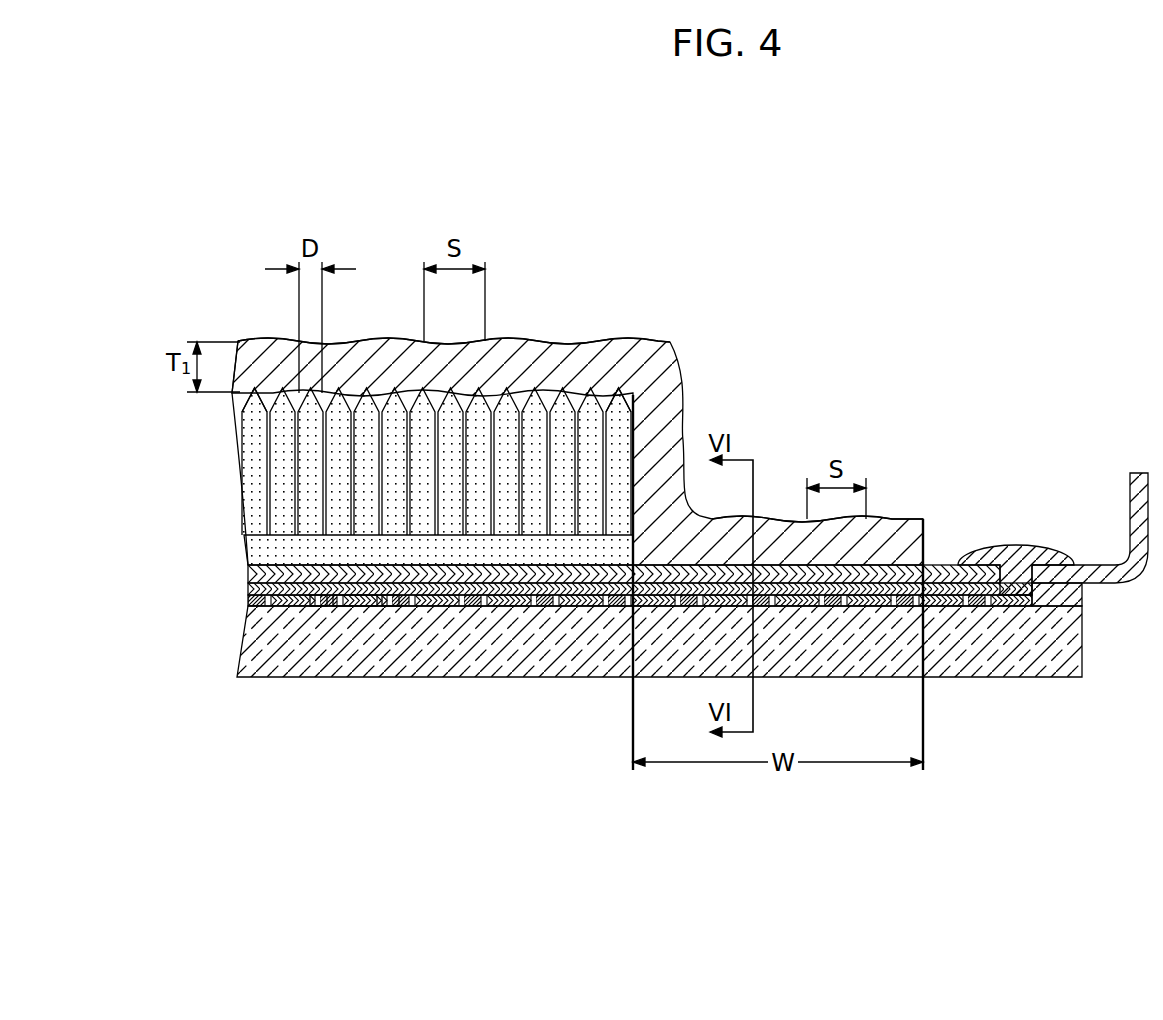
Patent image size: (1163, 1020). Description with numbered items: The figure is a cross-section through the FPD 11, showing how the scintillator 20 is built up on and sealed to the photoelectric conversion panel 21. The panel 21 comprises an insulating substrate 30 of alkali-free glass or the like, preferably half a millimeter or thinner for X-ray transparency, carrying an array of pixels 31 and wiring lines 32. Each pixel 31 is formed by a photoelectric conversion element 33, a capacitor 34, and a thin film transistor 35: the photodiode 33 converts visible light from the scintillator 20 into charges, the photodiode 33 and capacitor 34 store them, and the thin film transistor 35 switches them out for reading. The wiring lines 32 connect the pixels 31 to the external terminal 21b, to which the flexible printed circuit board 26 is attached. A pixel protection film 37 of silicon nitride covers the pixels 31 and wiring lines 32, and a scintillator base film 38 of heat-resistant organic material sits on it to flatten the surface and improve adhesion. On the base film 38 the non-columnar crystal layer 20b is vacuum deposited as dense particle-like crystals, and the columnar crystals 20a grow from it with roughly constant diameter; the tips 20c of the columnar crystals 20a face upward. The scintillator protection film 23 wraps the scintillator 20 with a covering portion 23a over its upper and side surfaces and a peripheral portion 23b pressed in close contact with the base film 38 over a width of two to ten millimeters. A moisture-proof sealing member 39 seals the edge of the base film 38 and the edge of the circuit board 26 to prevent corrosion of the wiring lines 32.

The FPD 11 is at (945, 298).
The scintillator 20 is at (525, 438).
The columnar crystal 20a is at (620, 450).
The non-columnar crystal layer 20b is at (606, 547).
The tip portion 20c is at (620, 392).
The photoelectric conversion panel 21 is at (668, 628).
The external terminal 21b is at (1078, 594).
The scintillator protection film 23 is at (667, 344).
The covering portion 23a is at (541, 341).
The peripheral portion 23b is at (912, 519).
The flexible printed circuit board 26 is at (1136, 511).
The insulating substrate 30 is at (1060, 677).
The pixel 31 is at (440, 681).
The wiring line 32 is at (970, 608).
The photoelectric conversion element 33 is at (346, 606).
The capacitor 34 is at (312, 606).
The thin film transistor 35 is at (384, 606).
The pixel protection film 37 is at (830, 608).
The scintillator base film 38 is at (946, 569).
The sealing member 39 is at (1020, 548).